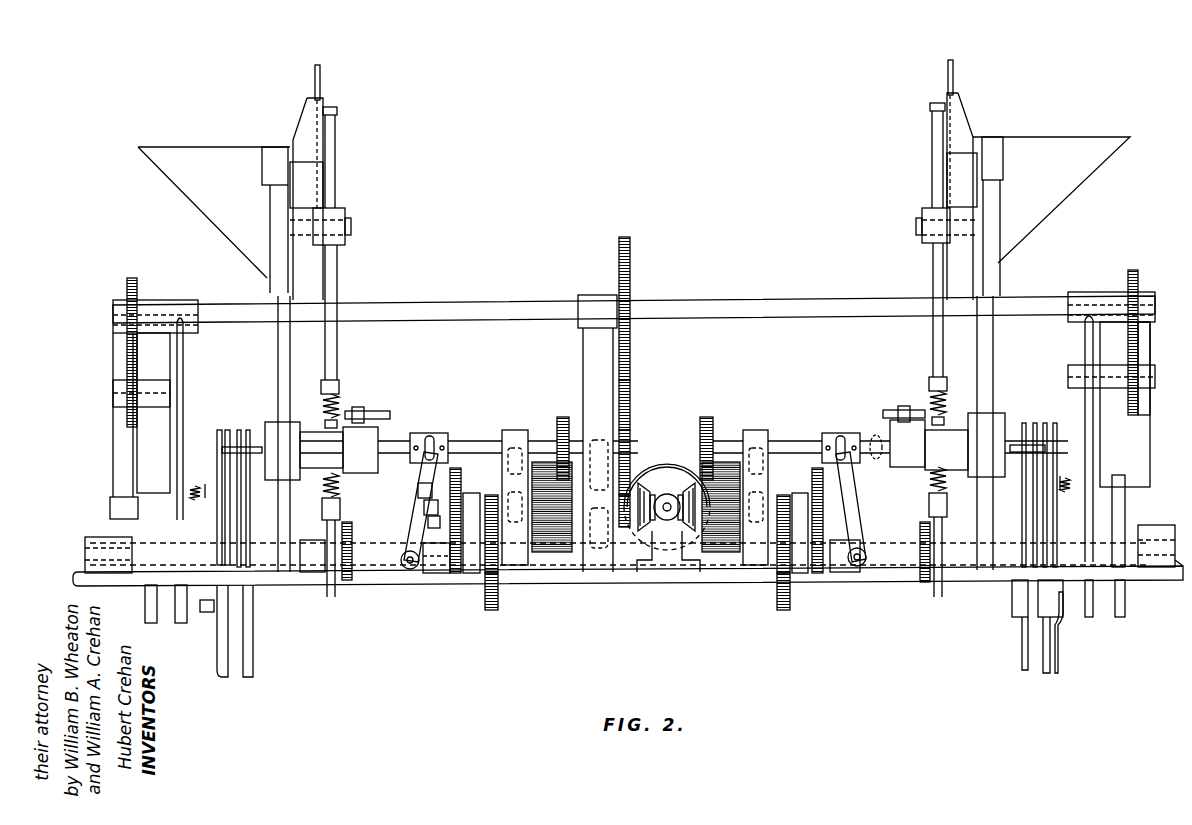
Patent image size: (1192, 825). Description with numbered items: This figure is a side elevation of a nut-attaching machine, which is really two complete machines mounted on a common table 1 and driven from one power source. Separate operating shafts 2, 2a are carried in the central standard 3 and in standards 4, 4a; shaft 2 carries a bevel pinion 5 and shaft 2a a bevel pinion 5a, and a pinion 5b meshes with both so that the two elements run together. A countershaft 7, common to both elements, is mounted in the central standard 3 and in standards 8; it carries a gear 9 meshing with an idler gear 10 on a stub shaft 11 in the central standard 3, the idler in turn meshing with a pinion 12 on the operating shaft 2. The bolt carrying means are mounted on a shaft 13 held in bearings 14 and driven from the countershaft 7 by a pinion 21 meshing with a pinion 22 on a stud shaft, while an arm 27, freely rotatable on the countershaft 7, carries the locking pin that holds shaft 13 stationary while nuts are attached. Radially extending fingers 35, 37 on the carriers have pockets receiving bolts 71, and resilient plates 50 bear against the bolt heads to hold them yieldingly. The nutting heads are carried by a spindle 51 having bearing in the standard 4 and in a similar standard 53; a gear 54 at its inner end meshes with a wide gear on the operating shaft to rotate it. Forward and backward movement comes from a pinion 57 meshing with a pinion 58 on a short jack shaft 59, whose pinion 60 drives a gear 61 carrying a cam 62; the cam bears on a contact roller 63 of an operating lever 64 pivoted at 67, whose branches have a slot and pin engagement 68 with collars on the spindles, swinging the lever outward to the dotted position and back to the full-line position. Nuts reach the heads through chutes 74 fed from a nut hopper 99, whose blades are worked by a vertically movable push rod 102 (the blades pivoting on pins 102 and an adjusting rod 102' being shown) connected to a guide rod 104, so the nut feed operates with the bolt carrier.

The table 1 is at (893, 578).
The operating shaft 2 is at (586, 578).
The operating shaft 2a is at (748, 578).
The central standard 3 is at (599, 295).
The standard 4 is at (509, 430).
The standard 4a is at (762, 430).
The bevel pinion 5 is at (651, 540).
The bevel pinion 5a is at (683, 540).
The pinion 5b is at (664, 478).
The countershaft 7 is at (725, 303).
The standard 8 is at (150, 300).
The gear 9 is at (633, 362).
The idler gear 10 is at (632, 406).
The stub shaft 11 is at (635, 447).
The pinion 12 is at (628, 530).
The shaft 13 is at (1172, 566).
The bearing 14 is at (1158, 525).
The pinion 21 is at (1134, 272).
The pinion 22 is at (1140, 357).
The arm 27 is at (188, 302).
The finger 35 is at (1046, 673).
The finger 37 is at (1009, 631).
The resilient plate 50 is at (1060, 655).
The spindle 51 is at (790, 432).
The standard 53 is at (380, 427).
The gear 54 is at (562, 417).
The pinion 57 is at (491, 495).
The pinion 58 is at (496, 602).
The jack shaft 59 is at (440, 576).
The pinion 60 is at (456, 580).
The gear 61 is at (457, 468).
The cam 62 is at (432, 526).
The contact roller 63 is at (426, 509).
The operating lever 64 is at (420, 490).
The pivot 67 is at (408, 570).
The slot and pin engagement 68 is at (436, 434).
The bolt 71 is at (234, 440).
The nut supplying chute 74 is at (994, 378).
The nut hopper 99 is at (634, 216).
The push rod 102 is at (633, 174).
The adjusting rod 102' is at (634, 420).
The guide rod 104 is at (322, 89).